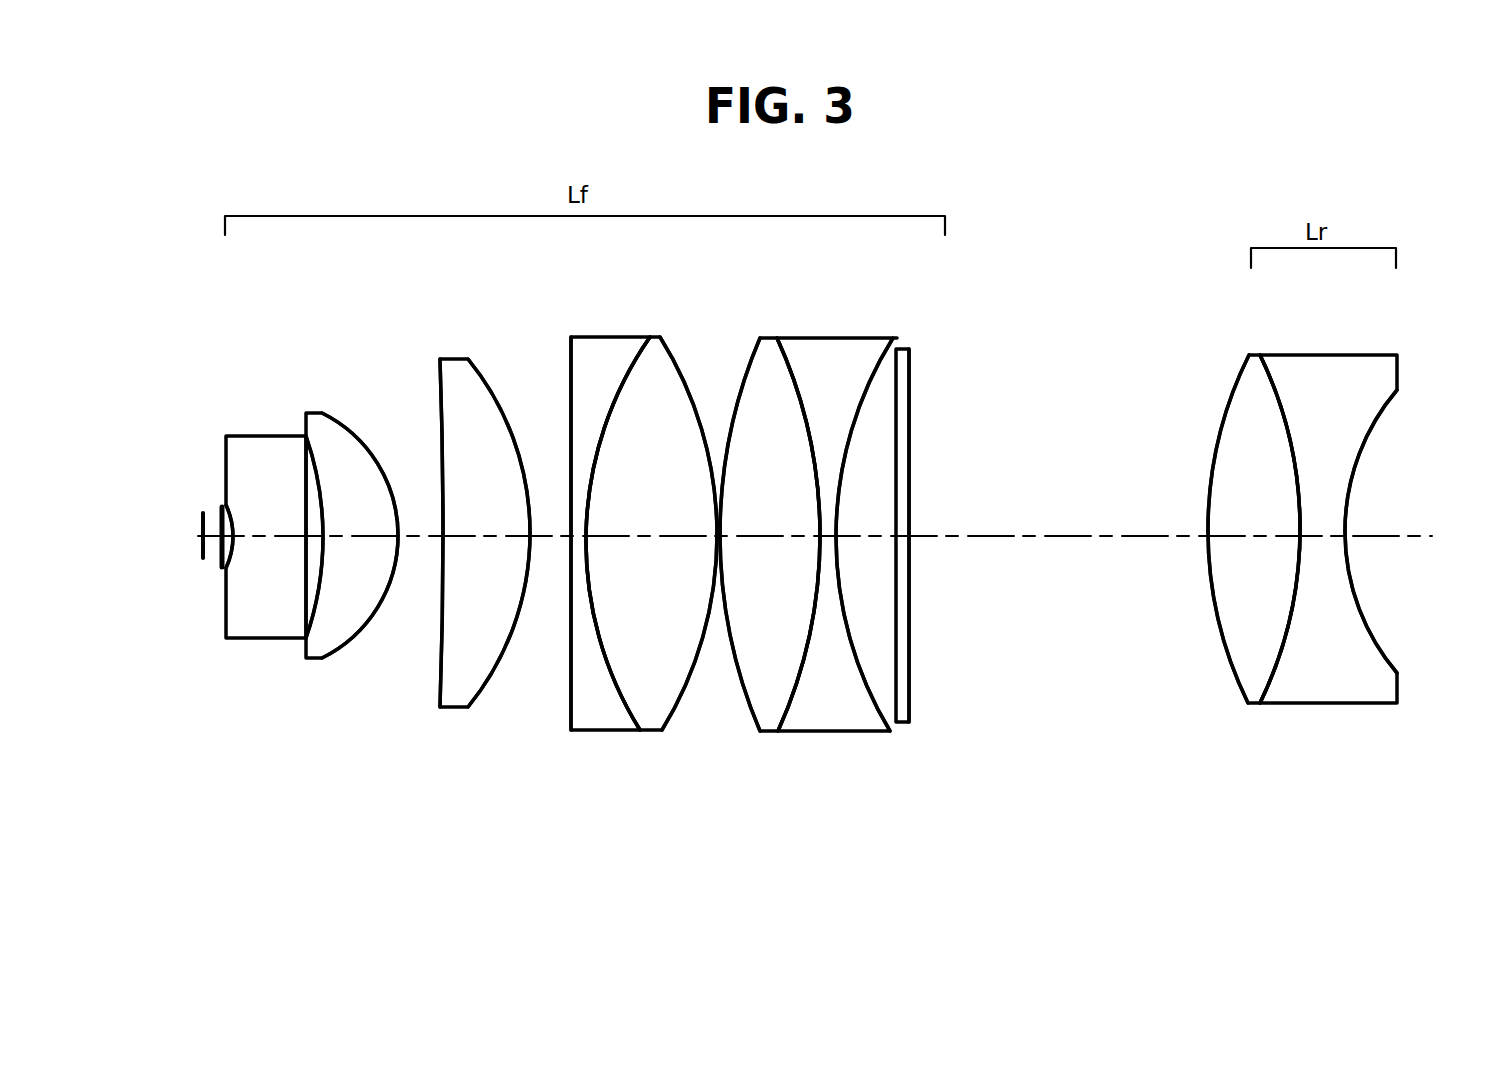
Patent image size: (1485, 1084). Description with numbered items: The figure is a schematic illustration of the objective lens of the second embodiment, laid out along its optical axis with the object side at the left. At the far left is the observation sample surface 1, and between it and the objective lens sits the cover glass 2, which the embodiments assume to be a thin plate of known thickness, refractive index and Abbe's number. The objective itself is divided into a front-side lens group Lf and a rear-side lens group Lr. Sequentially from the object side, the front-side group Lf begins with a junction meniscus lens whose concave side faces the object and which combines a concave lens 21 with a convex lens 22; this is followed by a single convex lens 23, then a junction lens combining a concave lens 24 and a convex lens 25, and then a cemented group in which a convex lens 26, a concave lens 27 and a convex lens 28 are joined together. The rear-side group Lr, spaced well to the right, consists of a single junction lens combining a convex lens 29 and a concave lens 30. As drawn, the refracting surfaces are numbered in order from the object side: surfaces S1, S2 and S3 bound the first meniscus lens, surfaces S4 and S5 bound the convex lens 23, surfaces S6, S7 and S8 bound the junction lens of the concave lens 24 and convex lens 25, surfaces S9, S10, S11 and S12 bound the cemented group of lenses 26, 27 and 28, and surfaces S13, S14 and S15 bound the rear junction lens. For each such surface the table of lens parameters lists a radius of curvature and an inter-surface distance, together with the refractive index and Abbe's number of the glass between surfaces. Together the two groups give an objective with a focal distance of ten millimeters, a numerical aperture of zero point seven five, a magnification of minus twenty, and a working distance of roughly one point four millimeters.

The observation sample surface 1 is at (202, 517).
The cover glass 2 is at (220, 508).
The concave lens 21 is at (273, 433).
The convex lens 22 is at (347, 428).
The convex lens 23 is at (457, 359).
The concave lens 24 is at (610, 337).
The convex lens 25 is at (652, 337).
The convex lens 26 is at (767, 338).
The concave lens 27 is at (825, 337).
The convex lens 28 is at (905, 349).
The convex lens 29 is at (1262, 355).
The concave lens 30 is at (1341, 355).
The lens surface S1 is at (226, 566).
The lens surface S2 is at (292, 618).
The lens surface S3 is at (347, 637).
The lens surface S4 is at (440, 670).
The lens surface S5 is at (492, 675).
The lens surface S6 is at (571, 725).
The lens surface S7 is at (635, 716).
The lens surface S8 is at (668, 718).
The lens surface S9 is at (758, 727).
The lens surface S10 is at (781, 727).
The lens surface S11 is at (885, 720).
The lens surface S12 is at (911, 677).
The lens surface S13 is at (1235, 676).
The lens surface S14 is at (1269, 679).
The lens surface S15 is at (1377, 642).